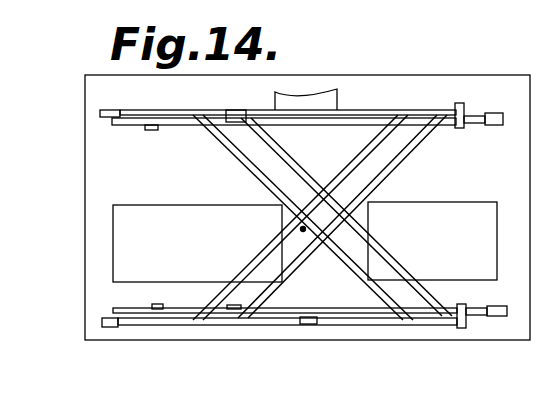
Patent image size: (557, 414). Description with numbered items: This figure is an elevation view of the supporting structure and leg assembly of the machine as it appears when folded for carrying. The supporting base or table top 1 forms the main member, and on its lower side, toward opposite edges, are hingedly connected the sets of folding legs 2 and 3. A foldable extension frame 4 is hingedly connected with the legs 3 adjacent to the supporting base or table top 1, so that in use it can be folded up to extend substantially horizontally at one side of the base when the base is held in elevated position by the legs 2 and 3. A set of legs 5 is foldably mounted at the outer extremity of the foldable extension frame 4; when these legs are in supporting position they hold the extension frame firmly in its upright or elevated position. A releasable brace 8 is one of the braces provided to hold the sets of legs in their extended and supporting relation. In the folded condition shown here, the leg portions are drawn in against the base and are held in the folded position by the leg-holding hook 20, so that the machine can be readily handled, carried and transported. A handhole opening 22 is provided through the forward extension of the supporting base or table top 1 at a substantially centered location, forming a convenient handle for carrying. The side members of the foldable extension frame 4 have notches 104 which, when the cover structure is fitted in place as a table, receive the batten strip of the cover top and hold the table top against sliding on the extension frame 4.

The supporting base or table top 1 is at (307, 207).
The folding legs 2 is at (479, 112).
The folding legs 3 is at (123, 128).
The foldable extension frame 4 is at (363, 110).
The legs 5 is at (387, 117).
The releasable brace 8 is at (163, 130).
The leg-holding hook 20 is at (298, 223).
The handhole opening 22 is at (322, 108).
The notches 104 is at (307, 325).